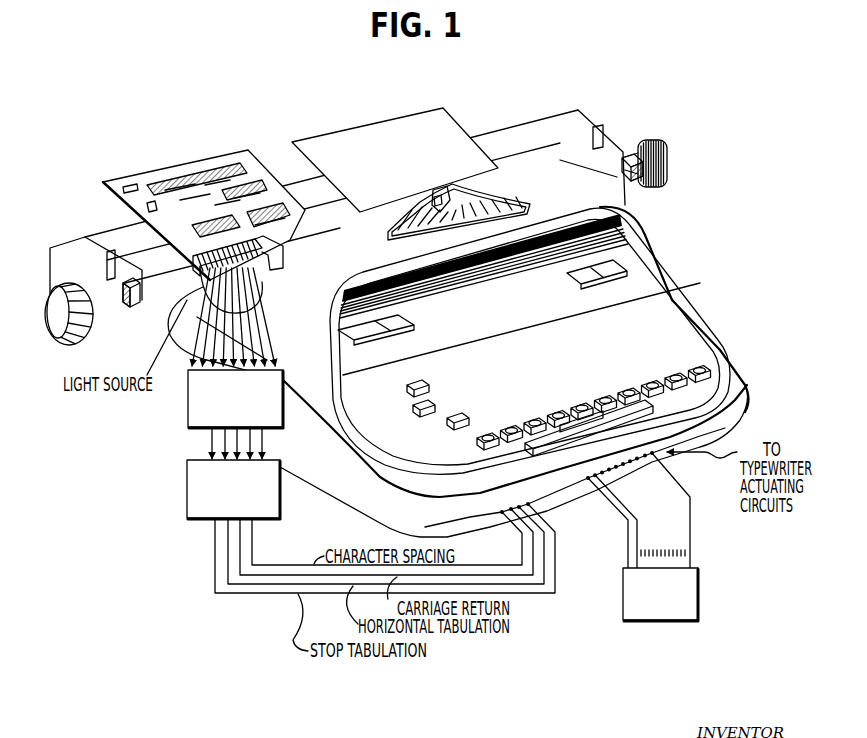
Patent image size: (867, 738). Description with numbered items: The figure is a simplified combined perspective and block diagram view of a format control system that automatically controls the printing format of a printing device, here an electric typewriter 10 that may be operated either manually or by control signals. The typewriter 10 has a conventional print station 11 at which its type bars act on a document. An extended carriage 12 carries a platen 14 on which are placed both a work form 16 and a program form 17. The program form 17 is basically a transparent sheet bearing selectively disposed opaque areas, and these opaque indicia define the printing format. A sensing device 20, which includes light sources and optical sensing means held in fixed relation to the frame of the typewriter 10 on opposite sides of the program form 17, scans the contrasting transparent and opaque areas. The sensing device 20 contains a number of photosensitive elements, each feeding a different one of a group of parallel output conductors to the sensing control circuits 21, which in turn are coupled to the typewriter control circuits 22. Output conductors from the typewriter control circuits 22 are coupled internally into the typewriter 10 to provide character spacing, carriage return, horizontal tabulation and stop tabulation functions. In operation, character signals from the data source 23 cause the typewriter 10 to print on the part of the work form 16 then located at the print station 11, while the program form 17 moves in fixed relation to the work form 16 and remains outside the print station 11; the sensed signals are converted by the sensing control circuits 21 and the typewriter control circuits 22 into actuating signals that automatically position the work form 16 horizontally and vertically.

The electric typewriter 10 is at (676, 286).
The print station 11 is at (437, 187).
The extended carriage 12 is at (641, 184).
The platen 14 is at (588, 163).
The work form 16 is at (358, 124).
The program form 17 is at (199, 154).
The sensing device 20 is at (200, 262).
The sensing control circuits 21 is at (188, 411).
The typewriter control circuits 22 is at (187, 500).
The data source 23 is at (700, 578).